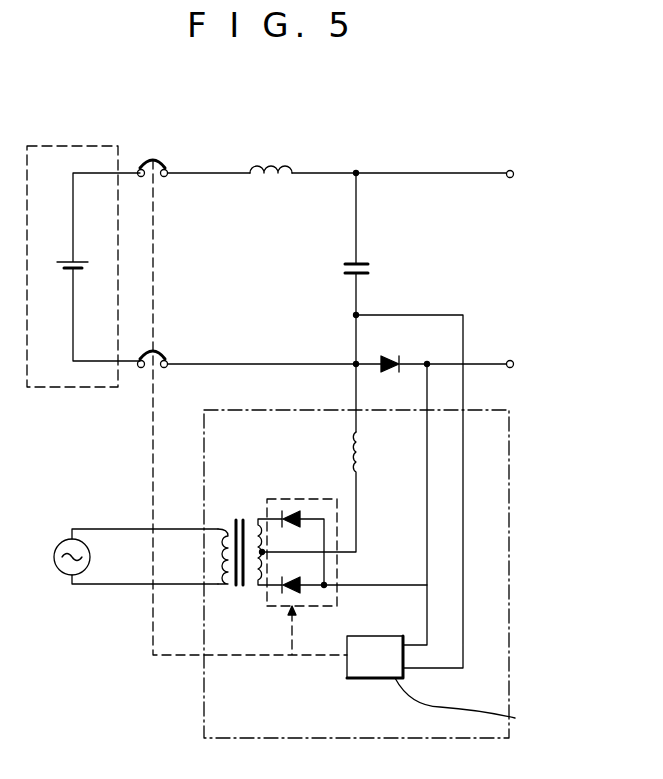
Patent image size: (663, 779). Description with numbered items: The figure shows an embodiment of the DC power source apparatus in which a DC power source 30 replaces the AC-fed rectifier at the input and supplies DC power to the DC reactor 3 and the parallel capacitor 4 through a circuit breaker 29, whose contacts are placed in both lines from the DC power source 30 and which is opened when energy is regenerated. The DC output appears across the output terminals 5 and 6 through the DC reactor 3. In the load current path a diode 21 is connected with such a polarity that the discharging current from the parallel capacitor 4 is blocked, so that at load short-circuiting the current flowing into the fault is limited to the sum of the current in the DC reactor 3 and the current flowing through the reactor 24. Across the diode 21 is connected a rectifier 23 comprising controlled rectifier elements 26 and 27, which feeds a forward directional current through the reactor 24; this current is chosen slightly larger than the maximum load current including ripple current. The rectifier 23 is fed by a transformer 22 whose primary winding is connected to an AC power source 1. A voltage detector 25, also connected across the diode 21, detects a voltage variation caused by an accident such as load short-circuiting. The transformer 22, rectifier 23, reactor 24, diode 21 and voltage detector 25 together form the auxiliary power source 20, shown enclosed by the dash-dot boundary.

The AC power source 1 is at (55, 561).
The DC reactor 3 is at (268, 186).
The capacitor 4 is at (372, 269).
The output terminal 5 is at (515, 175).
The output terminal 6 is at (515, 365).
The auxiliary power source 20 is at (510, 626).
The diode 21 is at (391, 353).
The transformer 22 is at (237, 520).
The rectifier 23 is at (338, 566).
The reactor 24 is at (362, 459).
The voltage detector 25 is at (371, 679).
The controlled rectifier element 26 is at (290, 512).
The controlled rectifier element 27 is at (280, 591).
The circuit breaker 29 is at (166, 346).
The DC power source 30 is at (65, 389).